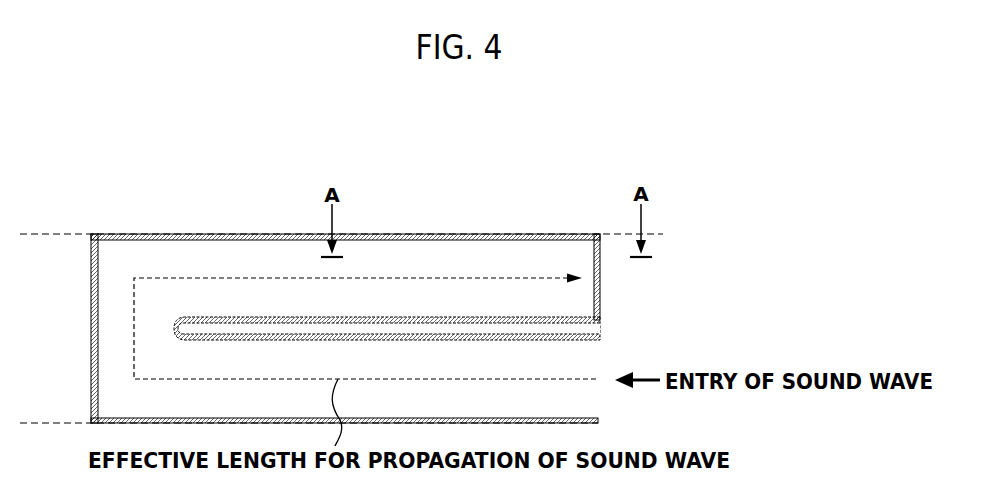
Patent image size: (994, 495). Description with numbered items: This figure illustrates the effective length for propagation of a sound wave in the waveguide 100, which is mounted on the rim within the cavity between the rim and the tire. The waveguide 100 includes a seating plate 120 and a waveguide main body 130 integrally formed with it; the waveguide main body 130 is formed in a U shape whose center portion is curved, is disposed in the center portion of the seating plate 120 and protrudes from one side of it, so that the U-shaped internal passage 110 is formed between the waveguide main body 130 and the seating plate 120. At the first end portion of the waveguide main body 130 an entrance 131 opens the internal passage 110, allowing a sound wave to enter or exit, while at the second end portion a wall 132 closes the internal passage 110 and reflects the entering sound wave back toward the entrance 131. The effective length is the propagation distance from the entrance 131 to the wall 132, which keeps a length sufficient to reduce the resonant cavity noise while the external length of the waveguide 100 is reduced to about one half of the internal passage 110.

The waveguide 100 is at (365, 284).
The internal passage 110 is at (407, 259).
The seating plate 120 is at (73, 233).
The waveguide main body 130 is at (442, 256).
The entrance 131 is at (598, 340).
The wall 132 is at (600, 284).